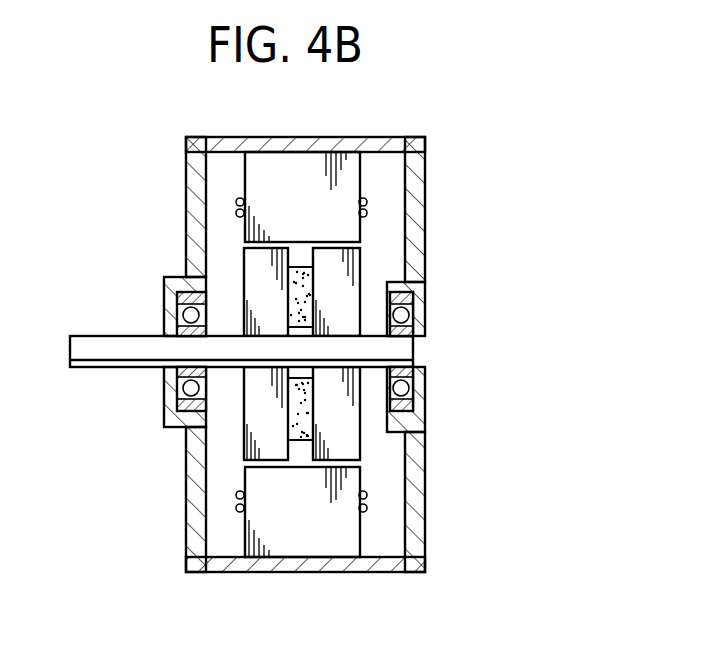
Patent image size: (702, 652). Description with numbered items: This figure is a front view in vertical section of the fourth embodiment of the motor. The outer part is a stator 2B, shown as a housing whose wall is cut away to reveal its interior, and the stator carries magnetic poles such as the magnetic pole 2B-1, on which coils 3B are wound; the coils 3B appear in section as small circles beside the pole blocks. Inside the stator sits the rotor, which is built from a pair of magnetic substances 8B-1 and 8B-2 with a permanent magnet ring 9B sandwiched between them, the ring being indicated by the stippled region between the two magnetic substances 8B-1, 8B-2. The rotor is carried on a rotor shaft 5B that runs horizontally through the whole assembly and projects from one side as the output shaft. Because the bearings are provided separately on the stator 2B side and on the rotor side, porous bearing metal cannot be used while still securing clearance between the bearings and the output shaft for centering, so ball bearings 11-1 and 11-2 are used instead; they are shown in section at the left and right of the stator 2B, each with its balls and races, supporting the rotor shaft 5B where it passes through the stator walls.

The stator 2B is at (197, 134).
The magnetic pole 2B-1 is at (323, 177).
The coils 3B is at (364, 199).
The magnetic substance 8B-1 is at (260, 263).
The magnetic substance 8B-2 is at (332, 280).
The permanent magnet ring 9B is at (300, 425).
The rotor shaft 5B is at (117, 364).
The ball bearing 11-1 is at (168, 277).
The ball bearing 11-2 is at (403, 292).